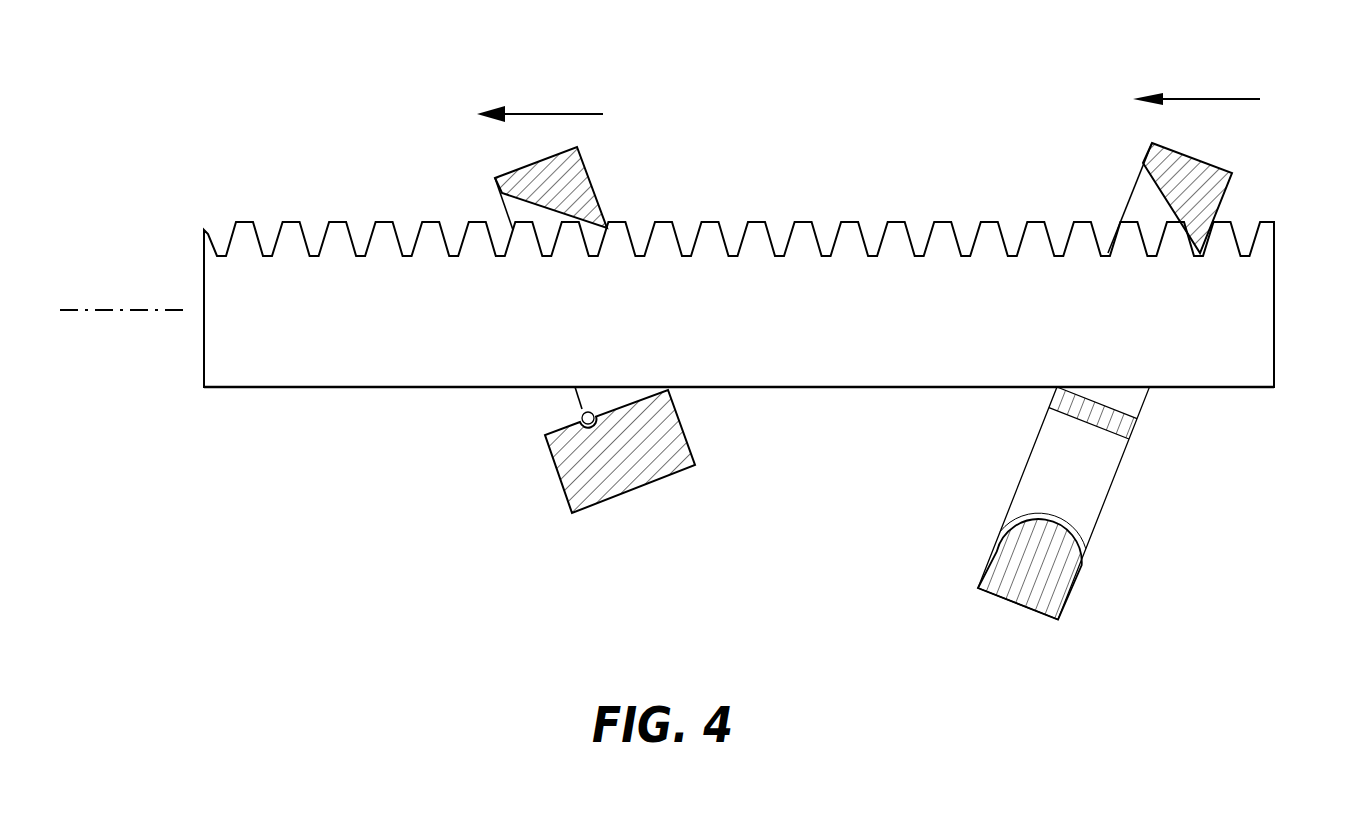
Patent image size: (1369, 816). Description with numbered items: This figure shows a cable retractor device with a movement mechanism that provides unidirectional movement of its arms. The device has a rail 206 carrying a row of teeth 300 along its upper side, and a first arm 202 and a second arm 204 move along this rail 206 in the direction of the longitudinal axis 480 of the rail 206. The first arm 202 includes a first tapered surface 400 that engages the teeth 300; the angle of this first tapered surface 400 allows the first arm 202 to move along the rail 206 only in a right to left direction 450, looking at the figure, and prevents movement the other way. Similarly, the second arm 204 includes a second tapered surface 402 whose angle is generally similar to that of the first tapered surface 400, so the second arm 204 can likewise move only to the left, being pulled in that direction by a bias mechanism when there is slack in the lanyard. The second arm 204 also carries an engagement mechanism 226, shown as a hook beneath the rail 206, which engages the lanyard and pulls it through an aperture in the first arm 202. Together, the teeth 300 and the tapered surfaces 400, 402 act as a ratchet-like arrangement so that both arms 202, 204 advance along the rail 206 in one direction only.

The first arm 202 is at (1193, 158).
The second arm 204 is at (587, 175).
The rail 206 is at (1274, 315).
The engagement mechanism 226 is at (583, 412).
The teeth 300 is at (258, 228).
The first tapered surface 400 is at (1160, 190).
The second tapered surface 402 is at (527, 201).
The right to left direction 450 is at (1198, 99).
The longitudinal axis 480 is at (110, 310).